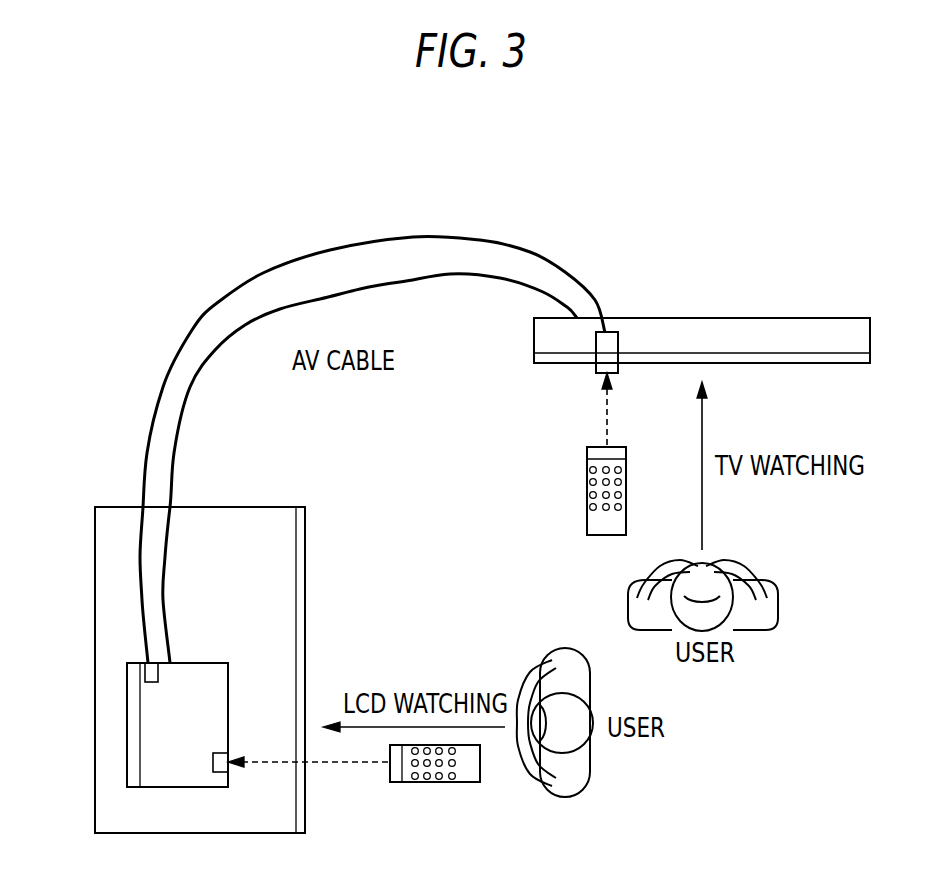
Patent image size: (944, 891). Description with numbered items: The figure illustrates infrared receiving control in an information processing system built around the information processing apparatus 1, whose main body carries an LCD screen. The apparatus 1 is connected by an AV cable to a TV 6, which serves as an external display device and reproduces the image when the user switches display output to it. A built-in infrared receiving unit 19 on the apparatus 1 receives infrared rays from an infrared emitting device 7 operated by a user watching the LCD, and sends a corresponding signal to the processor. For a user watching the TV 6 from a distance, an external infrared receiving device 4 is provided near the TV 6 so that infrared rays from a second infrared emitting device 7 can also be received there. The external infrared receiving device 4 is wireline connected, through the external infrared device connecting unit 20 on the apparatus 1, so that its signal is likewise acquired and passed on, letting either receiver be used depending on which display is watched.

The information processing apparatus 1 is at (173, 787).
The external infrared receiving device 4 is at (613, 332).
The TV 6 is at (748, 318).
The infrared emitting device 7 is at (587, 488).
The infrared receiving unit 19 is at (219, 772).
The external infrared device connecting unit 20 is at (145, 675).